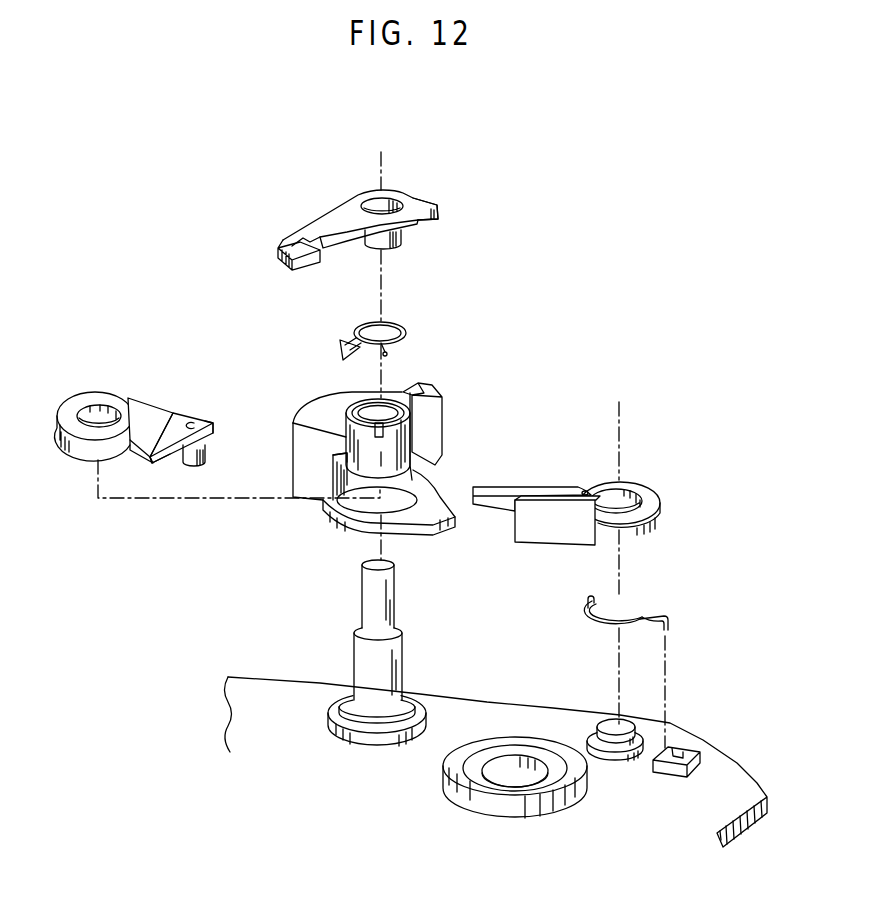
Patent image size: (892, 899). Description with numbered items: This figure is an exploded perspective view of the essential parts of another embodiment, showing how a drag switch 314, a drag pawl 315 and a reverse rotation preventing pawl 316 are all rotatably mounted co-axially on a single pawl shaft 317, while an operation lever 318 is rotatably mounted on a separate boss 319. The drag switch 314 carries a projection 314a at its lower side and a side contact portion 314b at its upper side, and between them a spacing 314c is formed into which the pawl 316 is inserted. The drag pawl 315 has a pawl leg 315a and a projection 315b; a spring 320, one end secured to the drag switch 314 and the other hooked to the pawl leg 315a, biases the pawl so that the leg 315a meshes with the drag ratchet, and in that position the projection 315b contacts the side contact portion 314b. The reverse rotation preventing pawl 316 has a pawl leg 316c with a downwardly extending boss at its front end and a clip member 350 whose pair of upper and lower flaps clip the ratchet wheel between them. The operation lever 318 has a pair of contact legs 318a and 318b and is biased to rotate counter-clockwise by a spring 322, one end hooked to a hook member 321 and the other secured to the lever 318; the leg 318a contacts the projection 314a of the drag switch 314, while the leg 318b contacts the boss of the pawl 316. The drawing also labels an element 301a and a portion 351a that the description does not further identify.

The base plate boss ring 301a is at (470, 740).
The drag switch 314 is at (368, 469).
The projection 314a is at (450, 528).
The side contact portion 314b is at (423, 393).
The spacing 314c is at (348, 486).
The drag pawl 315 is at (387, 231).
The pawl leg 315a is at (289, 268).
The projection 315b is at (442, 213).
The reverse rotation preventing pawl 316 is at (166, 452).
The pawl leg 316c is at (214, 425).
The pawl shaft 317 is at (352, 614).
The operation lever 318 is at (580, 515).
The contact leg 318a is at (508, 497).
The contact leg 318b is at (560, 535).
The boss 319 is at (605, 730).
The spring 320 is at (412, 328).
The hook member 321 is at (688, 748).
The spring 322 is at (650, 597).
The clip member 350 is at (178, 422).
The arm tab 351a is at (165, 467).